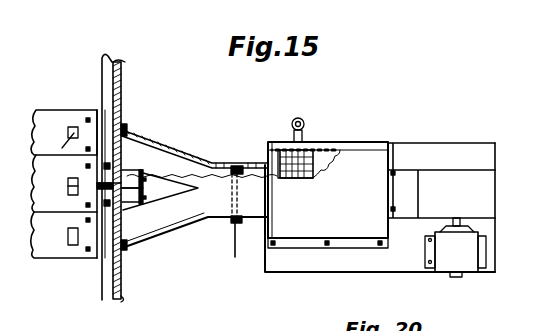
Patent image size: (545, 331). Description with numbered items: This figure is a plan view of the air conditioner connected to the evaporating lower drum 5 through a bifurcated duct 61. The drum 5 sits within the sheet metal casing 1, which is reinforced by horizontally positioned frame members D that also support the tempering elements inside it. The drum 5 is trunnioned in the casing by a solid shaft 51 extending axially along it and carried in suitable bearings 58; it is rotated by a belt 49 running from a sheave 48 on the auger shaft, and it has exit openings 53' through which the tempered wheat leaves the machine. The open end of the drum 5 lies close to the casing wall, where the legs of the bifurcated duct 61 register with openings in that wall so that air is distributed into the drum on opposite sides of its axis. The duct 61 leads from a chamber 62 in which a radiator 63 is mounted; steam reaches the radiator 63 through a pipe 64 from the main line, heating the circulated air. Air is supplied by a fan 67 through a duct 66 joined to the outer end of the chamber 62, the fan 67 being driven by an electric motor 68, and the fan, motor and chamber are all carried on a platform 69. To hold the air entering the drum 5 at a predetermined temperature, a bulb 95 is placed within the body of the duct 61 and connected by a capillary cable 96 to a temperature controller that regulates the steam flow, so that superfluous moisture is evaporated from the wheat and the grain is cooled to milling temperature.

The frame member D is at (106, 94).
The casing 1 is at (122, 100).
The lower drum 5 is at (56, 124).
The exit openings 53' is at (61, 176).
The bearings 58 is at (98, 197).
The bifurcated duct 61 is at (222, 156).
The sheave 48 is at (146, 190).
The belt 49 is at (143, 175).
The shaft 51 is at (128, 200).
The bulb 95 is at (247, 164).
The capillary cable 96 is at (230, 243).
The chamber 62 is at (328, 195).
The radiator 63 is at (308, 179).
The pipe 64 is at (306, 125).
The duct 66 is at (401, 178).
The fan 67 is at (445, 180).
The electric motor 68 is at (470, 246).
The platform 69 is at (400, 266).